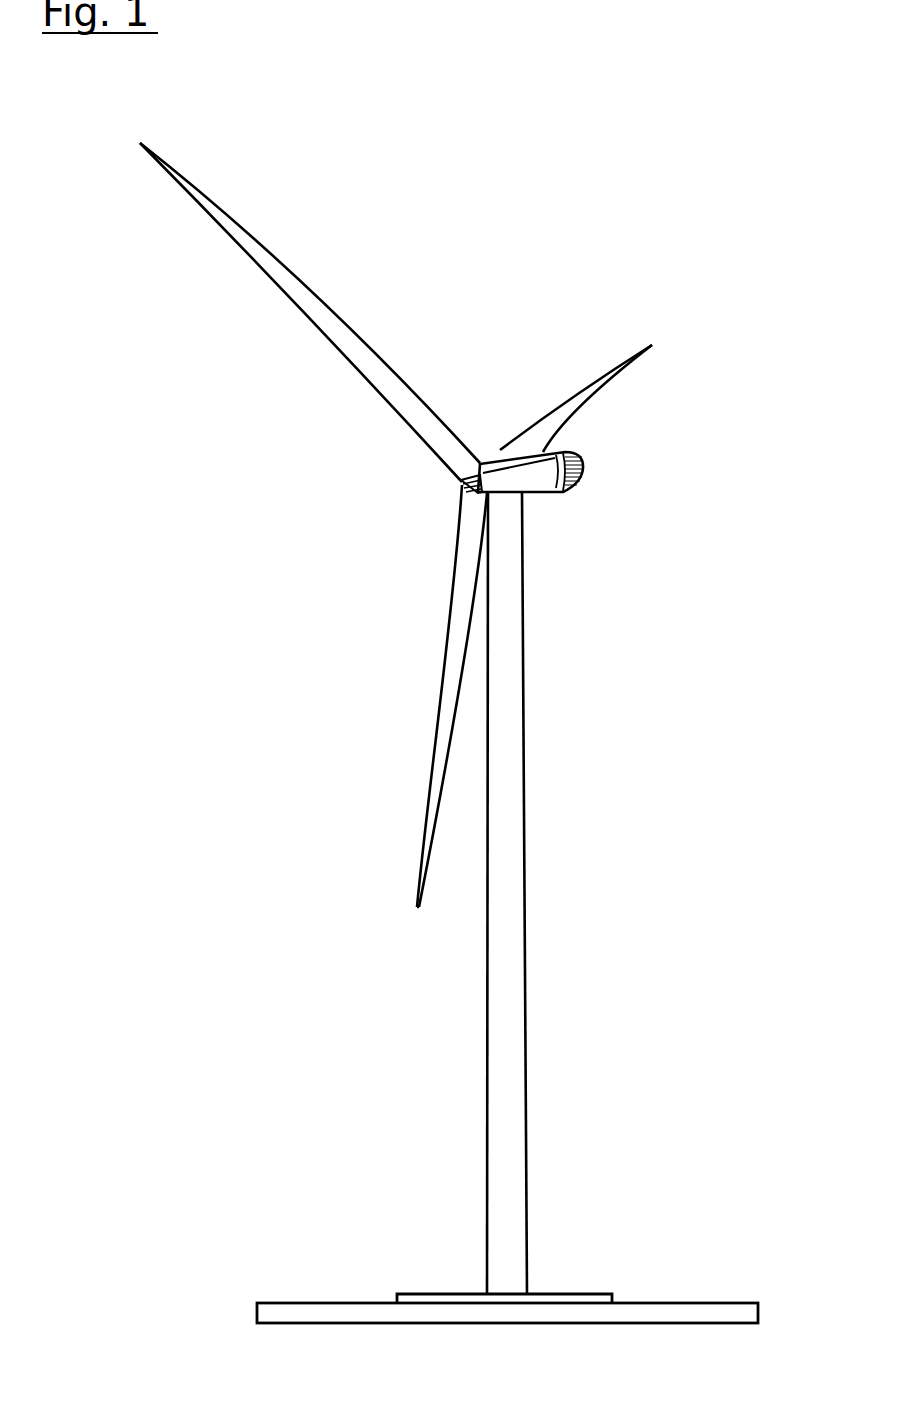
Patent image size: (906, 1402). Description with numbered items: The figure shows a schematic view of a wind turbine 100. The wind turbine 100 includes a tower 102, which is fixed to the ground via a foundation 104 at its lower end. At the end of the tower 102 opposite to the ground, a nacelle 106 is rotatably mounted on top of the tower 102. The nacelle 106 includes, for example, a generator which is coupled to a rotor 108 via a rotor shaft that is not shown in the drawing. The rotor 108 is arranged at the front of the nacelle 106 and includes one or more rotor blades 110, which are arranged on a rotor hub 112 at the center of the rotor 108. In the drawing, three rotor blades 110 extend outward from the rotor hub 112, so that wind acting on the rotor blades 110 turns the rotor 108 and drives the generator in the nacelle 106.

The wind turbine 100 is at (620, 781).
The tower 102 is at (505, 990).
The foundation 104 is at (625, 1308).
The nacelle 106 is at (553, 510).
The rotor 108 is at (482, 396).
The rotor blade 110 is at (337, 358).
The rotor hub 112 is at (465, 490).